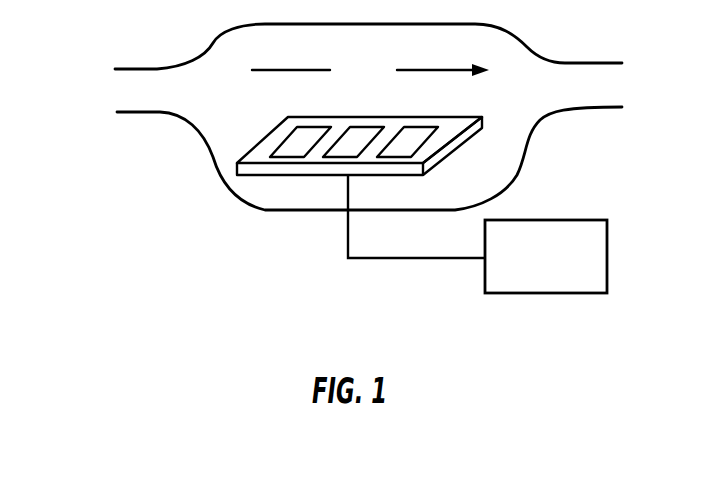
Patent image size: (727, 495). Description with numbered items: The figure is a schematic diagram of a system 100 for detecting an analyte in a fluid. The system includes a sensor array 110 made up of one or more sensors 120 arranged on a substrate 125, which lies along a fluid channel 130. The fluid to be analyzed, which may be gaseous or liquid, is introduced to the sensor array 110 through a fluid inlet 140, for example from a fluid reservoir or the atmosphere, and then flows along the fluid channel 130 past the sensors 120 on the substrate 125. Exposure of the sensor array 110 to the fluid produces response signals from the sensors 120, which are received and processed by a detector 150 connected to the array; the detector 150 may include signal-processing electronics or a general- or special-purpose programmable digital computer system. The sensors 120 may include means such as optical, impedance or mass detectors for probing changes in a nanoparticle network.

The system 100 is at (165, 186).
The sensor array 110 is at (331, 177).
The sensors 120 is at (290, 138).
The substrate 125 is at (452, 145).
The fluid channel 130 is at (370, 69).
The fluid inlet 140 is at (157, 67).
The detector 150 is at (570, 283).